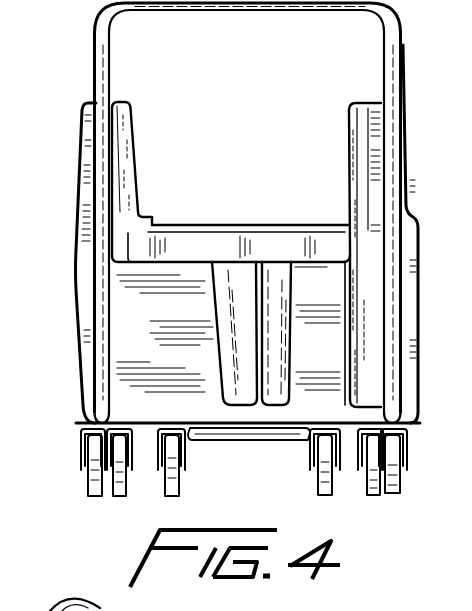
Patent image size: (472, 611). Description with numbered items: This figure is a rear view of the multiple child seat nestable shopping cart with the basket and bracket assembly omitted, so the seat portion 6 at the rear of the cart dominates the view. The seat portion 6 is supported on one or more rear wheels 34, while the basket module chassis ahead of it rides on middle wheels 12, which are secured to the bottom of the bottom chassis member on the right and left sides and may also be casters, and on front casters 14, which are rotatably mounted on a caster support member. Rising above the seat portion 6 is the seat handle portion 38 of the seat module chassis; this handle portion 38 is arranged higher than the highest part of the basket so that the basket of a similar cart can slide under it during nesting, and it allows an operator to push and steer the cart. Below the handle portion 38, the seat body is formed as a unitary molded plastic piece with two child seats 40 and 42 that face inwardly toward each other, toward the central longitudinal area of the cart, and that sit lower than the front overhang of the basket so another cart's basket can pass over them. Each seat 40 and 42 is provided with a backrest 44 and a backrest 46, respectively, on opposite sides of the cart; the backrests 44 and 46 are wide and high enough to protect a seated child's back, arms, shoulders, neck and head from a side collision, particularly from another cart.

The seat portion 6 is at (68, 158).
The middle wheels 12 is at (365, 492).
The front casters 14 is at (166, 488).
The rear wheels 34 is at (393, 493).
The seat handle portion 38 is at (263, 11).
The child seat 40 is at (325, 253).
The child seat 42 is at (170, 262).
The backrest 44 is at (367, 101).
The backrest 46 is at (121, 101).